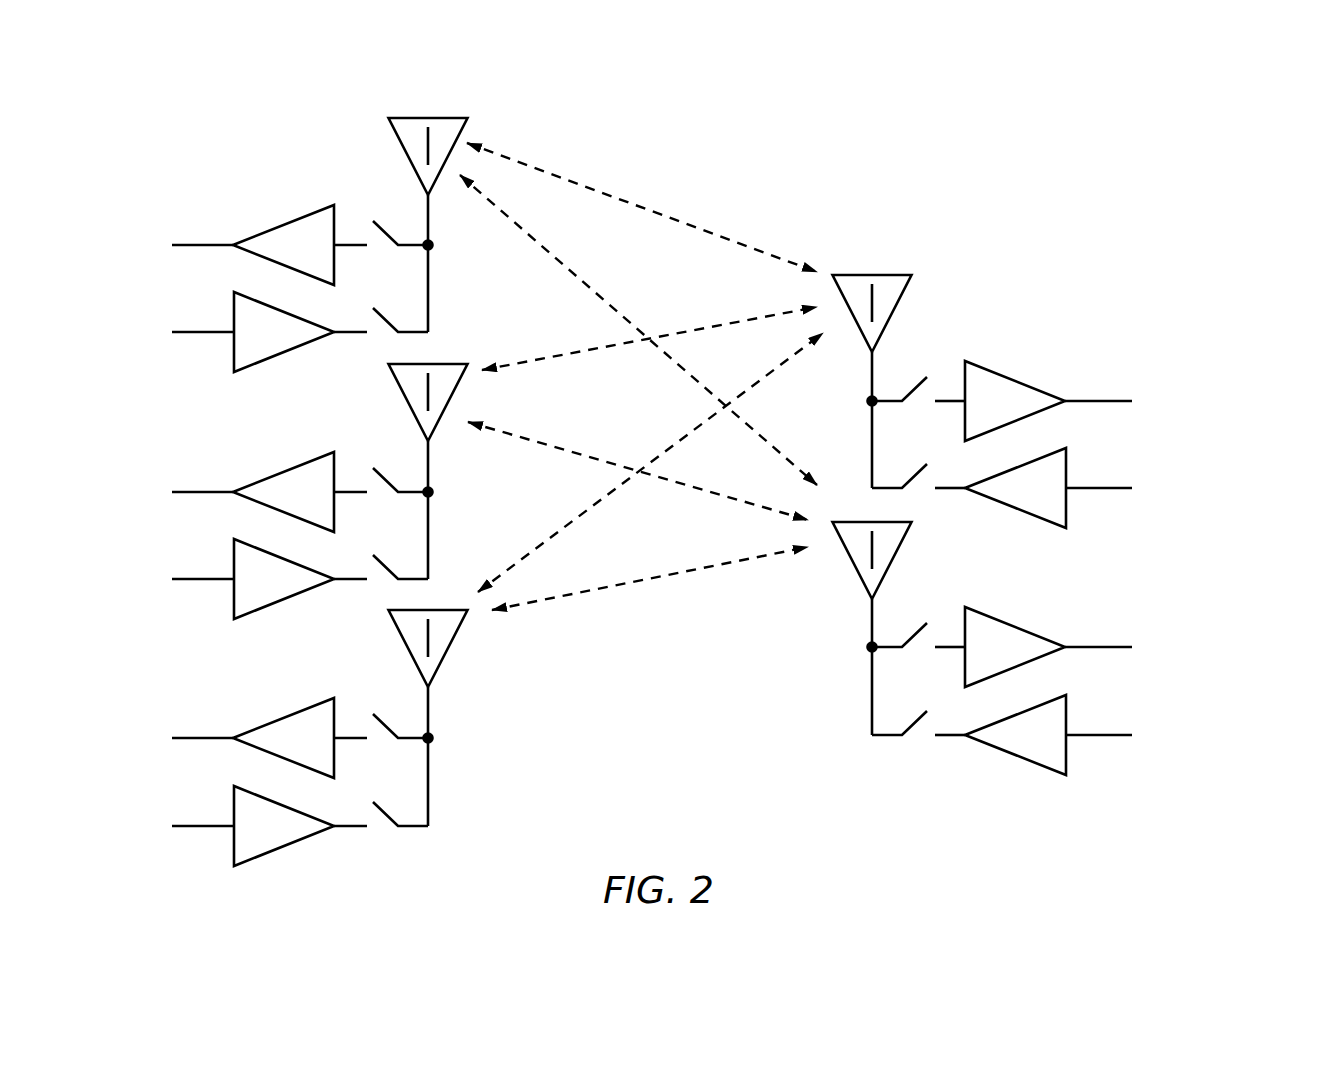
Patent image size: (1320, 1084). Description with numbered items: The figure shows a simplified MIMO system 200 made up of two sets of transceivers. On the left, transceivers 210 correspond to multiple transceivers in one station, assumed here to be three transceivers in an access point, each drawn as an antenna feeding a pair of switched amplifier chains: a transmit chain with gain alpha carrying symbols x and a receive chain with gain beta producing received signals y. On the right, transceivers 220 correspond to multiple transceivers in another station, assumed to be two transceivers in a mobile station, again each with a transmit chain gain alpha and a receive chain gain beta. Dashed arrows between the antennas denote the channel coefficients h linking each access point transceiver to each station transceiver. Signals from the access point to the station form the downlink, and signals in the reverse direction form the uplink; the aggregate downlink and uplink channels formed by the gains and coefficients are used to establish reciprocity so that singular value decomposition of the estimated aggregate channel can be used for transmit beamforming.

The system 200 is at (1196, 231).
The transceivers 210 is at (295, 152).
The transceivers 220 is at (1019, 191).